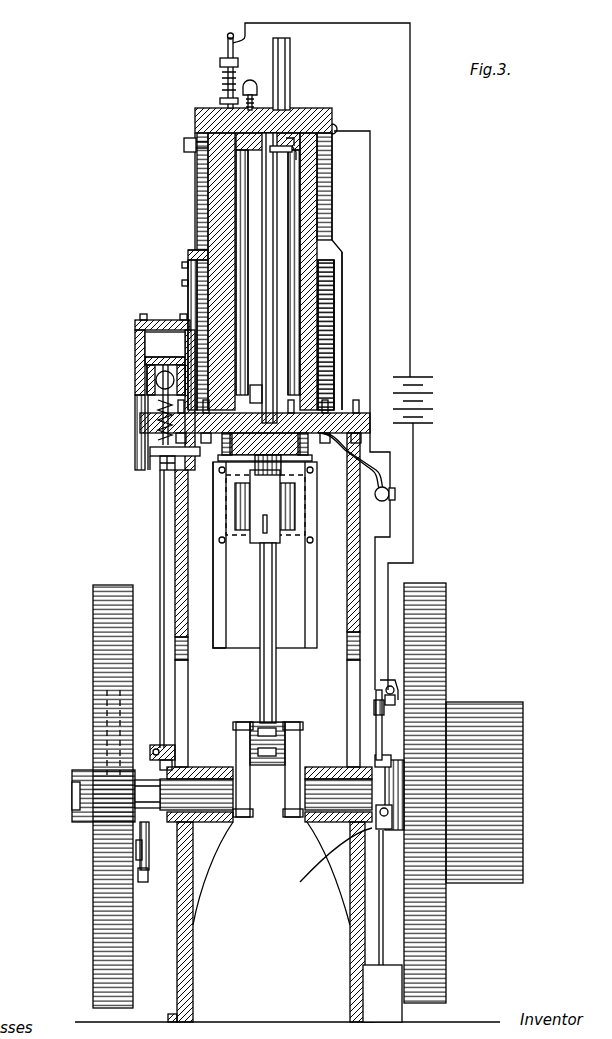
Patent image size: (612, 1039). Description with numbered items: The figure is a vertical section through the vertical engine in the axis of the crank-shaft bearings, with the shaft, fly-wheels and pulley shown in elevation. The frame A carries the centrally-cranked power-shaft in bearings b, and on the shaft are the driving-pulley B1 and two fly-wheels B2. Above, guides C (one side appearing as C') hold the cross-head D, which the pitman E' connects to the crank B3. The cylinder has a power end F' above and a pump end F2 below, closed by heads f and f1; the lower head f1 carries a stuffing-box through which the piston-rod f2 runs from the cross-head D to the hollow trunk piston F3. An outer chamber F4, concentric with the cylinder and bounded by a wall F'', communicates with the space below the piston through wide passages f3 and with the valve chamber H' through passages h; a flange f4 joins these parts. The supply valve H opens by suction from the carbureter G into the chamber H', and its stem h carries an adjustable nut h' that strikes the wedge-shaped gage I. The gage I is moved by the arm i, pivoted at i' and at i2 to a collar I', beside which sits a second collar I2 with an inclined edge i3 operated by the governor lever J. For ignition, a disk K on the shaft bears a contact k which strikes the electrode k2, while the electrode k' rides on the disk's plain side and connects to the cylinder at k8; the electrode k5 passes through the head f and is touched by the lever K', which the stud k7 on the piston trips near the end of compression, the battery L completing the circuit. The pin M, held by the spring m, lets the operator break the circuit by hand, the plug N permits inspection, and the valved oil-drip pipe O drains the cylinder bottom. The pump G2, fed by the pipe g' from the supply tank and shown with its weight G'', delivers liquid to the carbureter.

The battery L is at (340, 356).
The lever K' is at (230, 259).
The outer coil winding F'' is at (328, 271).
The power end F' is at (350, 331).
The chamber F4 is at (325, 322).
The pump end F2 is at (336, 354).
The piston F3 is at (283, 212).
The head f is at (290, 74).
The piston-rod f2 is at (262, 331).
The passage f3 is at (262, 394).
The flange f4 is at (218, 272).
The electrode k5 is at (226, 50).
The pin M is at (243, 88).
The spring m is at (256, 96).
The connection k8 is at (336, 128).
The plug N is at (184, 150).
The stud k7 is at (300, 156).
The head f1 is at (220, 457).
The valved oil-drip pipe O is at (392, 495).
The frame A is at (287, 727).
The guides C is at (272, 555).
The casing side C' is at (207, 555).
The cross-head D is at (235, 480).
The piston rod E' is at (281, 633).
The crank B3 is at (292, 718).
The bearings b is at (232, 768).
The fly-wheels B2 is at (100, 703).
The driving-pulley B1 is at (484, 792).
The contact k is at (398, 784).
The collar I2 is at (135, 778).
The inclined edge i3 is at (138, 790).
The collar I' is at (147, 855).
The lever J is at (145, 882).
The carbureter G is at (111, 392).
The valve H is at (165, 344).
The valve chamber H' is at (110, 348).
The valve stem h is at (123, 365).
The wedge-shaped gage I is at (114, 439).
The adjustable nut h' is at (128, 478).
The arm i is at (141, 609).
The pivot i' is at (176, 734).
The pivot i2 is at (172, 758).
The electrode k' is at (356, 725).
The electrode k2 is at (392, 725).
The disk K is at (387, 853).
The pipe g' is at (356, 901).
The weight G'' is at (382, 993).
The pump G2 is at (328, 863).